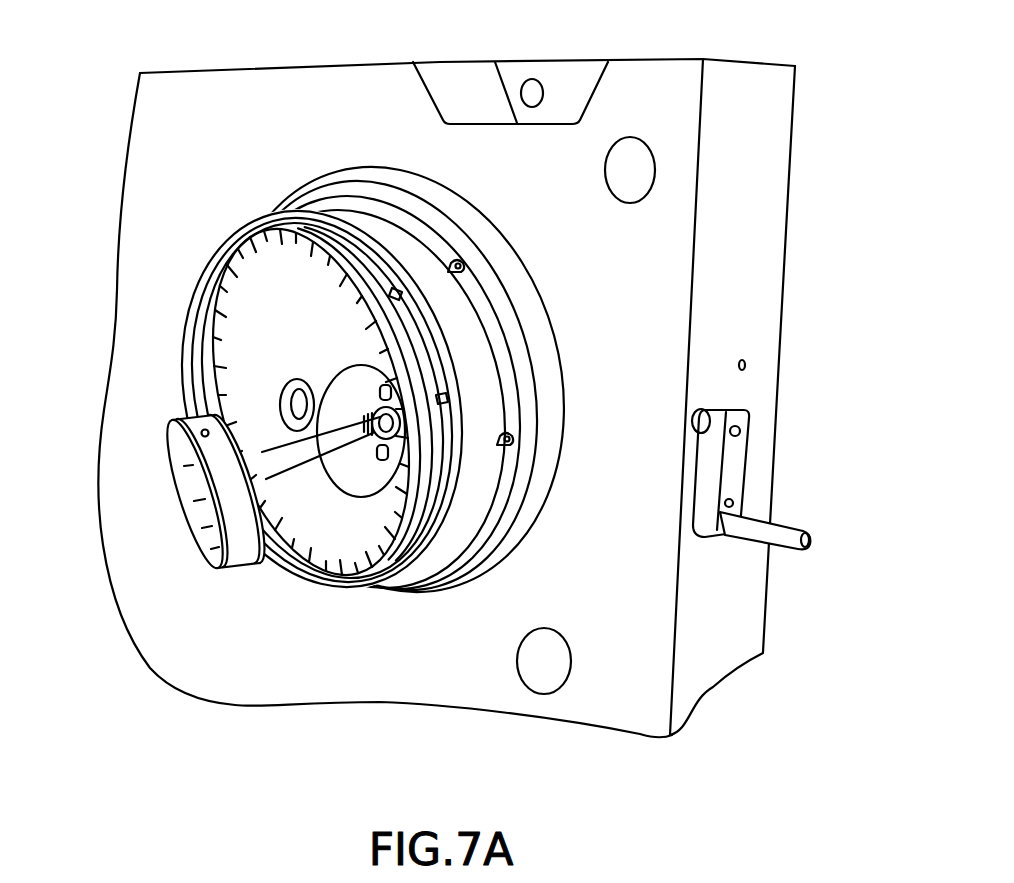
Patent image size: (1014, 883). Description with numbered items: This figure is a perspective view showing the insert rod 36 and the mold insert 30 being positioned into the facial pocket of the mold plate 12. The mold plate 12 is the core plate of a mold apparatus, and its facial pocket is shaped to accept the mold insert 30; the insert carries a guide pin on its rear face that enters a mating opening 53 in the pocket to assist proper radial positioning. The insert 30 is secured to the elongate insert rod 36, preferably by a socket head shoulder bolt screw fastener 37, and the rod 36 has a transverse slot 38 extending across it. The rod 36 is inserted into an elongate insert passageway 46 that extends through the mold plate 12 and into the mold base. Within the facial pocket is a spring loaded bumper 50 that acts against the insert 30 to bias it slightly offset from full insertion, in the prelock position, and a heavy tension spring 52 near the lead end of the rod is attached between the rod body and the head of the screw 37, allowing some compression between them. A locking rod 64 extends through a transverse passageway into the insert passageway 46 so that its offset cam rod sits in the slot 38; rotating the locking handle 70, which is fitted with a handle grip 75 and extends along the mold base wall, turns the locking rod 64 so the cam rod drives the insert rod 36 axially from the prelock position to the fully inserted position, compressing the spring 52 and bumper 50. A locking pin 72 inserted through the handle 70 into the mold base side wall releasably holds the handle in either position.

The mold plate 12 is at (273, 267).
The mold insert 30 is at (183, 489).
The insert rod 36 is at (288, 560).
The socket head shoulder bolt screw fastener 37 is at (405, 419).
The transverse slot 38 is at (430, 405).
The insert passageway 46 is at (463, 578).
The spring loaded bumper 50 is at (335, 392).
The heavy tension spring 52 is at (312, 441).
The mating opening 53 is at (365, 363).
The locking rod 64 is at (706, 400).
The locking handle 70 is at (733, 460).
The locking pin 72 is at (730, 501).
The handle grip 75 is at (813, 540).